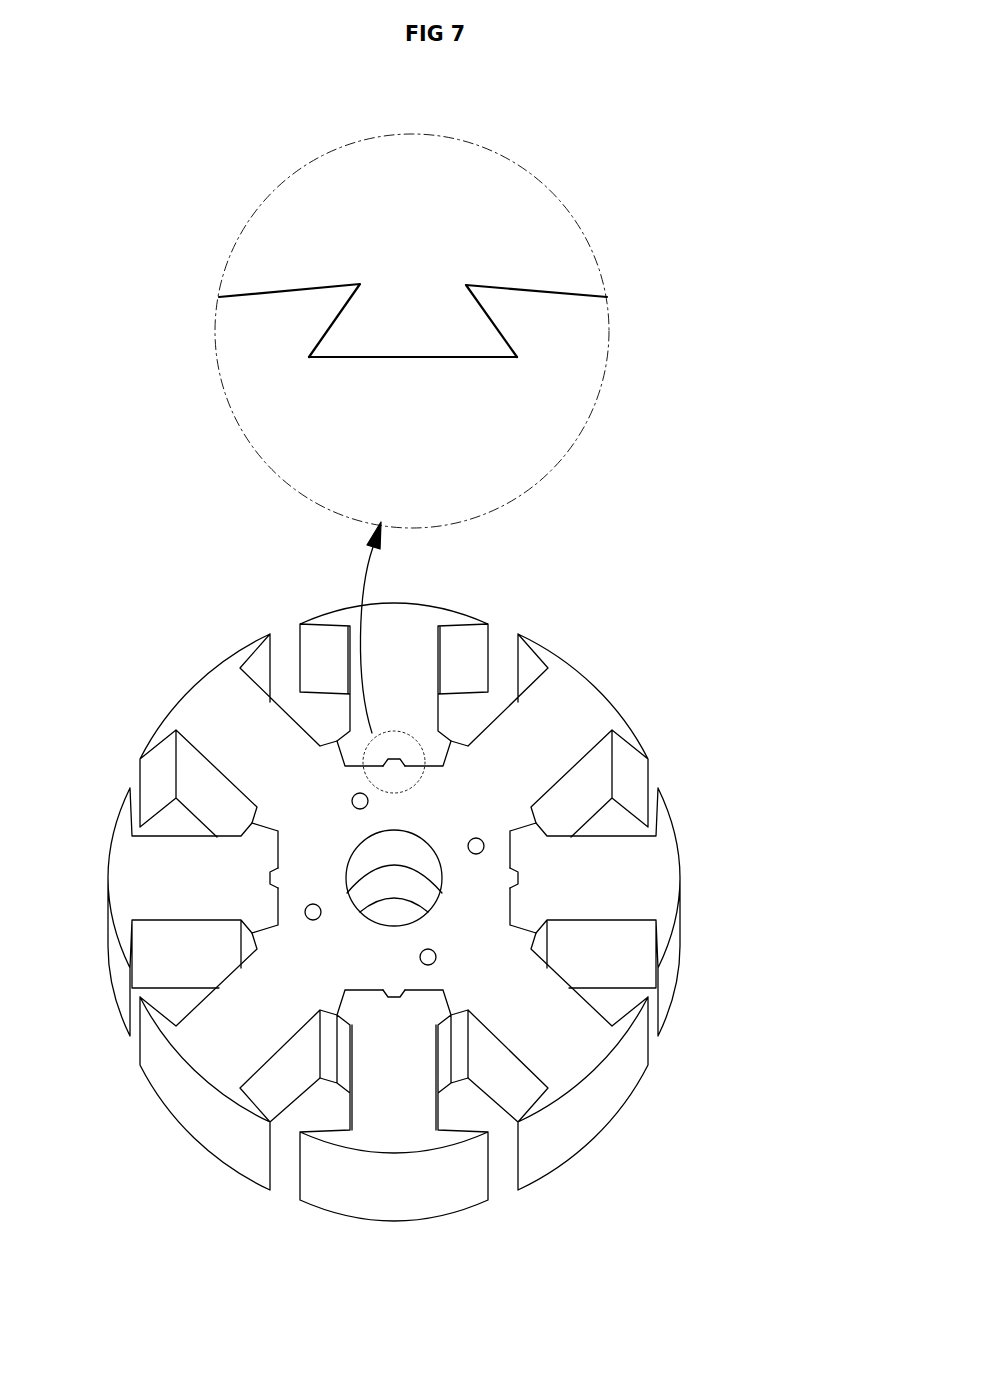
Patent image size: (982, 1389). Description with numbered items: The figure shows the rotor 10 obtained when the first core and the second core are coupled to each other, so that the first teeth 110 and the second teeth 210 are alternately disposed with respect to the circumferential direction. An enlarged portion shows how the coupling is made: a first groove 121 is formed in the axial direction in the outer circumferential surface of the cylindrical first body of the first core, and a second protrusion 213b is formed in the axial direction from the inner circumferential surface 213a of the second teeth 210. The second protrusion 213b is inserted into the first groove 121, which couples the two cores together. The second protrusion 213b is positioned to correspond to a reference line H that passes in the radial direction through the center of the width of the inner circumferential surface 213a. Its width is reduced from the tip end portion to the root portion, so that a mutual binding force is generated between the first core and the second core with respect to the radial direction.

The rotor 10 is at (100, 579).
The first teeth 110 is at (534, 406).
The first groove 121 is at (344, 358).
The second teeth 210 is at (695, 862).
The inner circumferential surface 213a is at (553, 287).
The second protrusion 213b is at (357, 322).
The reference line H is at (413, 103).